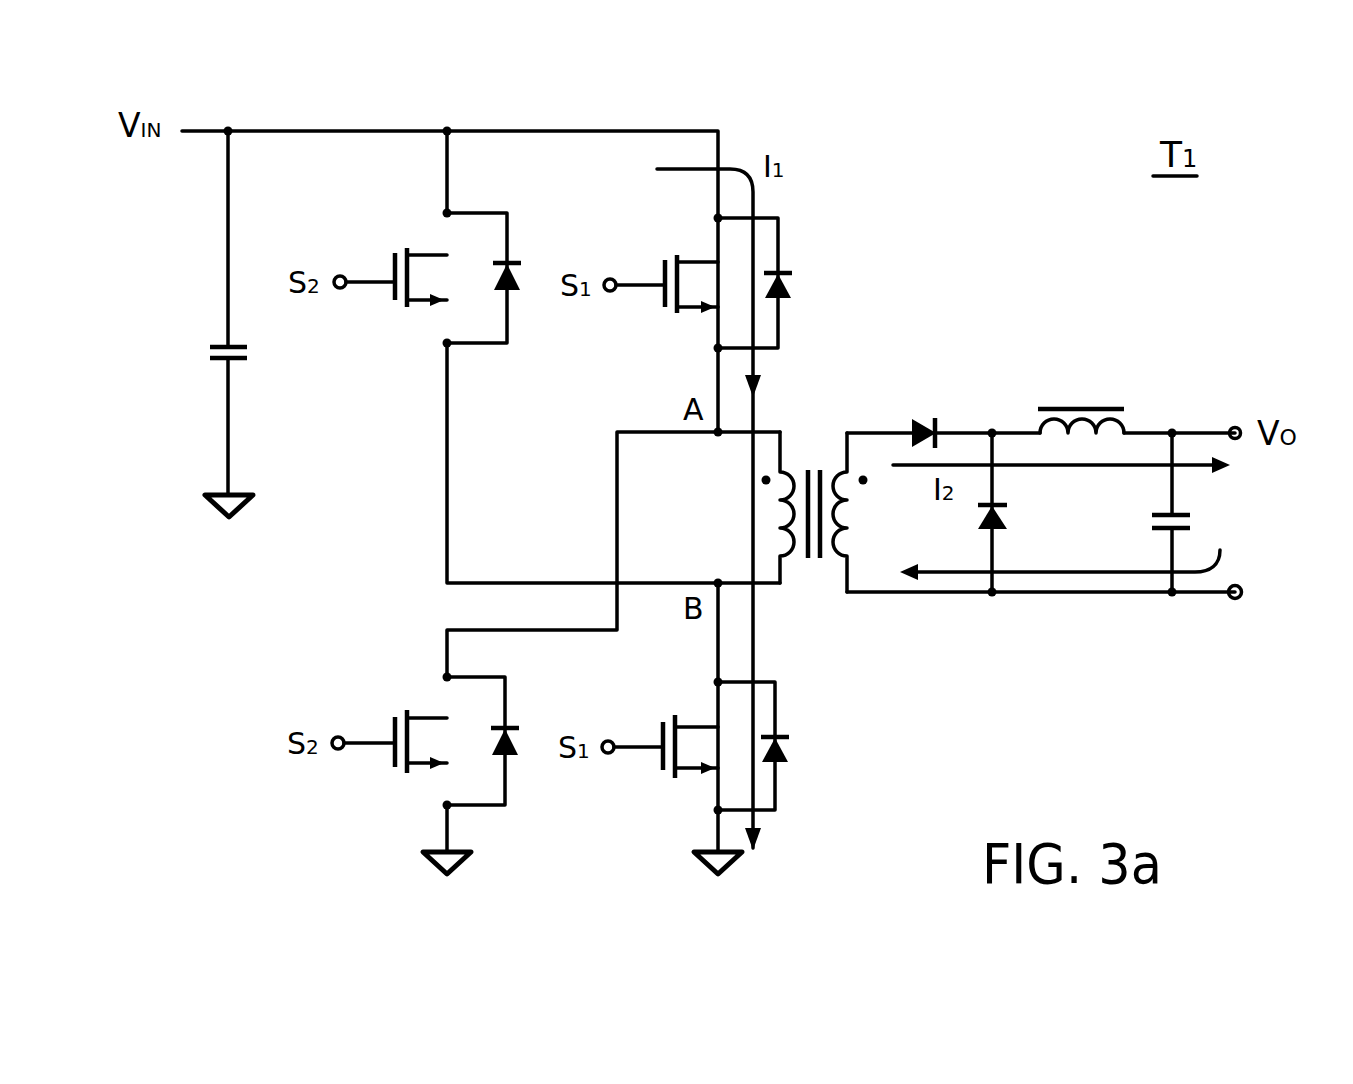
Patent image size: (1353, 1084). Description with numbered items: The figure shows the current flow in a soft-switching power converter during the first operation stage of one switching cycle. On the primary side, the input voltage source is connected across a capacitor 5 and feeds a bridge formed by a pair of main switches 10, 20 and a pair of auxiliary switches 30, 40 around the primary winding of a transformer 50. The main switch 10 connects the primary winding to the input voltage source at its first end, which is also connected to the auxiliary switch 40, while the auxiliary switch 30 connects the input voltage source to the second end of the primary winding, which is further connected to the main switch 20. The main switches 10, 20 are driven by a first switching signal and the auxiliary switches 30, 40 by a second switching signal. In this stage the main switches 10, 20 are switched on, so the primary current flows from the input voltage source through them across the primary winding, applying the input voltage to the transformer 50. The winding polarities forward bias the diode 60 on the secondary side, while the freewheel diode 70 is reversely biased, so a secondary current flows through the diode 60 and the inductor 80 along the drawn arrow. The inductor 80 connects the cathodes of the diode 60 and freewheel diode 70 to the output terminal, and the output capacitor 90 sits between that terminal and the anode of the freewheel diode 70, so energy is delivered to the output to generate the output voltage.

The capacitor 5 is at (206, 353).
The main switch 10 is at (672, 320).
The main switch 20 is at (670, 783).
The auxiliary switch 30 is at (400, 318).
The auxiliary switch 40 is at (398, 772).
The transformer 50 is at (824, 440).
The diode 60 is at (925, 415).
The freewheel diode 70 is at (1012, 520).
The inductor 80 is at (1080, 398).
The output capacitor 90 is at (1200, 520).